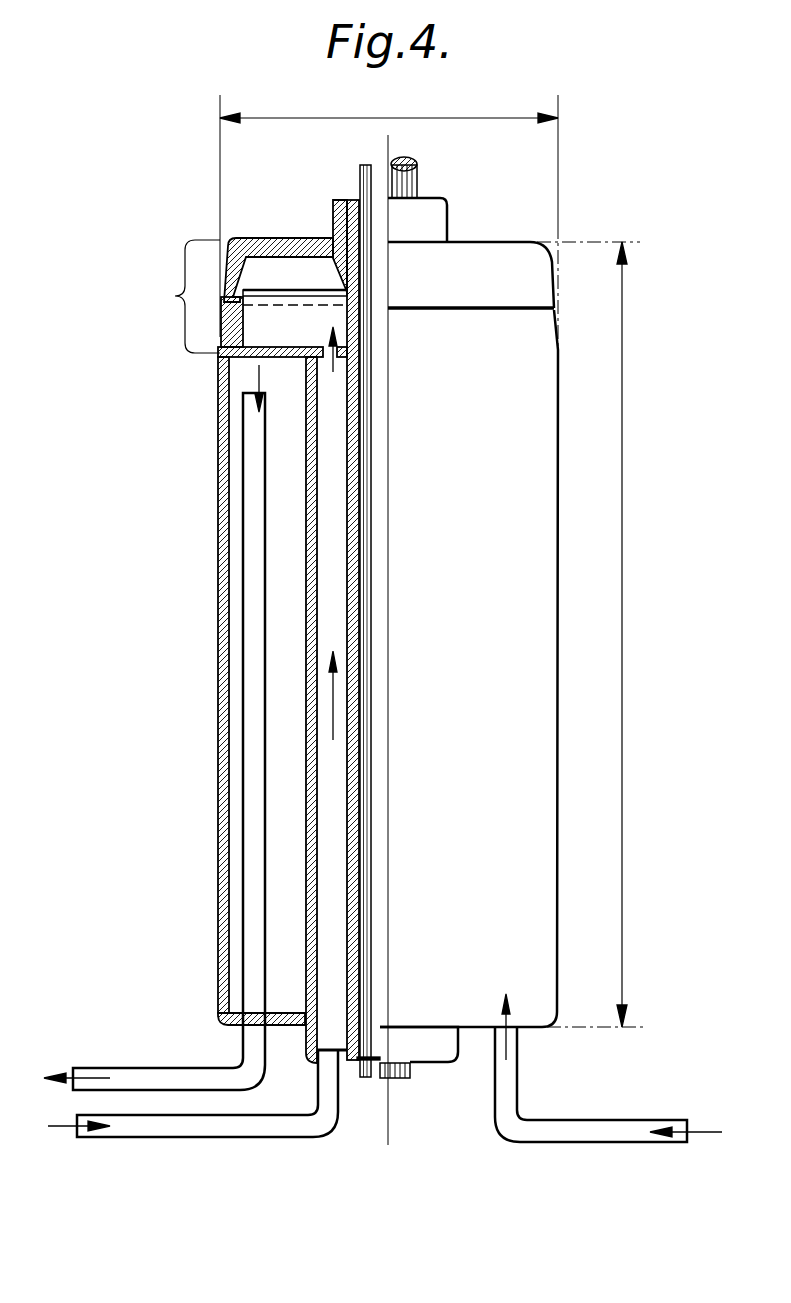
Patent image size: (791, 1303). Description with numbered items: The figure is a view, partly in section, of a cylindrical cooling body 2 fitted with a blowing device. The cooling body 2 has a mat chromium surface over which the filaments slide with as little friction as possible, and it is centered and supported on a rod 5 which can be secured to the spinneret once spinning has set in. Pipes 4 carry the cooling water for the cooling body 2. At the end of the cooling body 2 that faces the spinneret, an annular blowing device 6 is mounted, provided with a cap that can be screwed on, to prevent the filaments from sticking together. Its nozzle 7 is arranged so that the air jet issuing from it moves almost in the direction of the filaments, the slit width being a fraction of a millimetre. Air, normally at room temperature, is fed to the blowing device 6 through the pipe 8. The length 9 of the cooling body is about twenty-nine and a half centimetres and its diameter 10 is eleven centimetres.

The cooling body 2 is at (540, 515).
The pipes for the cooling water 4 is at (172, 1073).
The rod 5 is at (378, 165).
The annular blowing device 6 is at (233, 295).
The nozzle 7 is at (221, 314).
The pipe 8 is at (287, 1124).
The length 9 is at (622, 657).
The diameter 10 is at (482, 108).